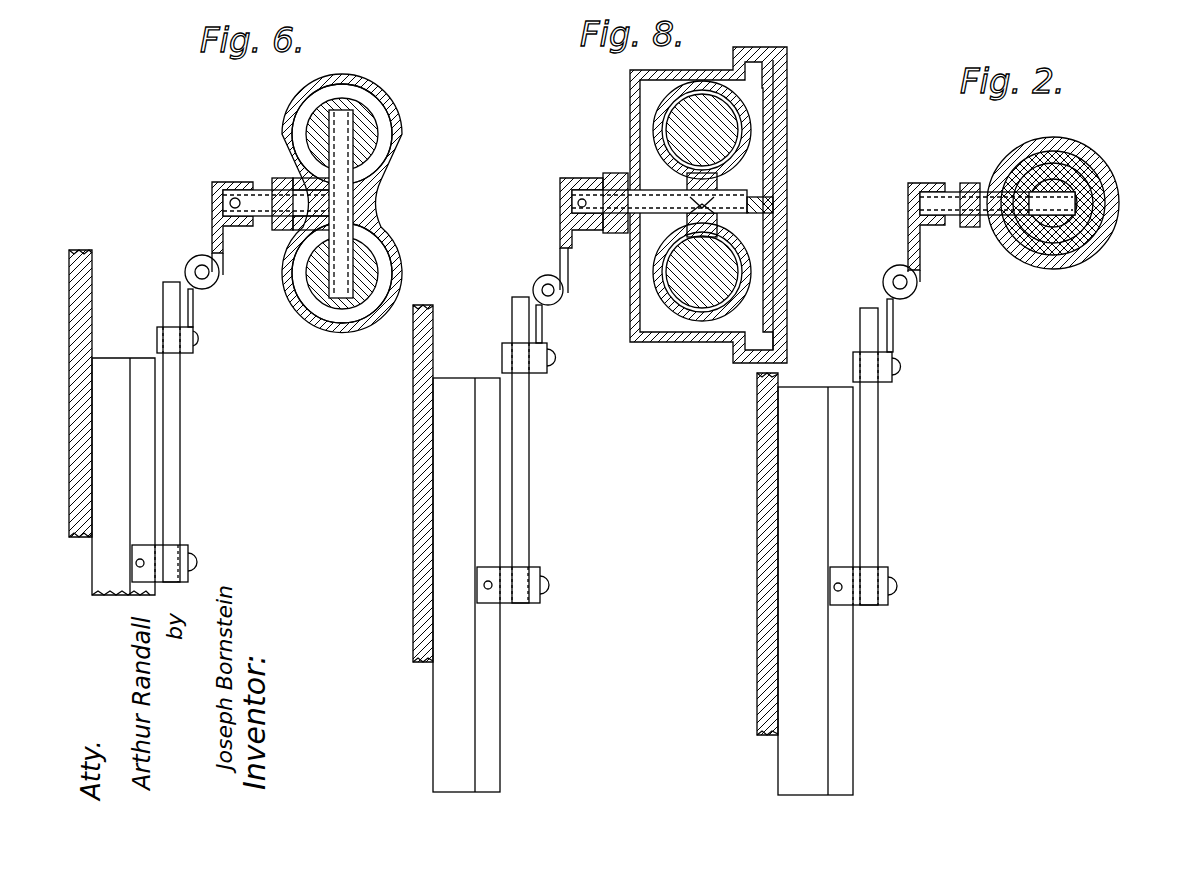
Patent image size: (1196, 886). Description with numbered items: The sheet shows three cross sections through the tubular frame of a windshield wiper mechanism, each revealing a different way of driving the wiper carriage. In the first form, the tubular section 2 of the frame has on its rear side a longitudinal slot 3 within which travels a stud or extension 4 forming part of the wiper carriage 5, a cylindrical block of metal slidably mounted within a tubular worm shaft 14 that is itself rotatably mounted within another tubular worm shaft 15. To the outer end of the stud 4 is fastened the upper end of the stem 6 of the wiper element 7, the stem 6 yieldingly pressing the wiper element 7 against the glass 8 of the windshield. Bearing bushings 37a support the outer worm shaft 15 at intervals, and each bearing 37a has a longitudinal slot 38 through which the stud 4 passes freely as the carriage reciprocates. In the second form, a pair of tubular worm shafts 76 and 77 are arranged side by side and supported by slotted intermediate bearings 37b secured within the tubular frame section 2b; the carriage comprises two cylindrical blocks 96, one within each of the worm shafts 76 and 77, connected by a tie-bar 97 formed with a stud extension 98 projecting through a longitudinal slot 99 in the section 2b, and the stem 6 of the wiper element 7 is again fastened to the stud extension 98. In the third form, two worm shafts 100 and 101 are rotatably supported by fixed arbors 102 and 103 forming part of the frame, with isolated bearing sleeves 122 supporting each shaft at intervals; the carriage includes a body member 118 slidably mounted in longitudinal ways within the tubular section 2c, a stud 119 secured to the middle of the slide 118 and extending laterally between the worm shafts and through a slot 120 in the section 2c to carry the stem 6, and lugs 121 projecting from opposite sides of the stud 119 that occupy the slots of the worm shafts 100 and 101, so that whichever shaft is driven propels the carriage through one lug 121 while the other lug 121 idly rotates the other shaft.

In FIG. 2, the tubular section 2 is at (1097, 178).
In FIG. 6, the tubular frame section 2b is at (352, 88).
In FIG. 8, the tubular section 2c is at (685, 342).
In FIG. 2, the longitudinal slot 3 is at (970, 183).
In FIG. 2, the stud or extension 4 is at (958, 215).
In FIG. 2, the wiper carriage 5 is at (1052, 183).
In FIG. 6, the stem 6 is at (182, 357).
In FIG. 8, the stem 6 is at (533, 377).
In FIG. 2, the stem 6 is at (880, 387).
In FIG. 6, the wiper element 7 is at (115, 458).
In FIG. 8, the wiper element 7 is at (462, 653).
In FIG. 2, the wiper element 7 is at (807, 655).
In FIG. 6, the glass 8 is at (92, 290).
In FIG. 8, the glass 8 is at (427, 520).
In FIG. 2, the glass 8 is at (768, 573).
In FIG. 2, the tubular worm shaft 14 is at (1078, 222).
In FIG. 2, the tubular worm shaft 15 is at (1095, 202).
In FIG. 2, the bearing bushing 37a is at (1110, 173).
In FIG. 6, the isolated bearing 37b is at (363, 100).
In FIG. 2, the longitudinal slot 38 is at (998, 183).
In FIG. 6, the tubular worm shaft 76 is at (373, 282).
In FIG. 6, the tubular worm shaft 77 is at (373, 157).
In FIG. 6, the cylindrical block 96 is at (362, 127).
In FIG. 6, the tie-bar 97 is at (347, 202).
In FIG. 6, the stud extension 98 is at (270, 210).
In FIG. 6, the longitudinal slot 99 is at (285, 178).
In FIG. 8, the worm shaft 100 is at (722, 325).
In FIG. 8, the worm shaft 101 is at (750, 127).
In FIG. 8, the fixed arbor 102 is at (718, 277).
In FIG. 8, the fixed arbor 103 is at (713, 133).
In FIG. 8, the body member 118 is at (770, 102).
In FIG. 8, the stud 119 is at (665, 207).
In FIG. 8, the slot 120 is at (612, 175).
In FIG. 8, the lug or stud 121 is at (717, 187).
In FIG. 8, the bearing sleeve 122 is at (723, 107).